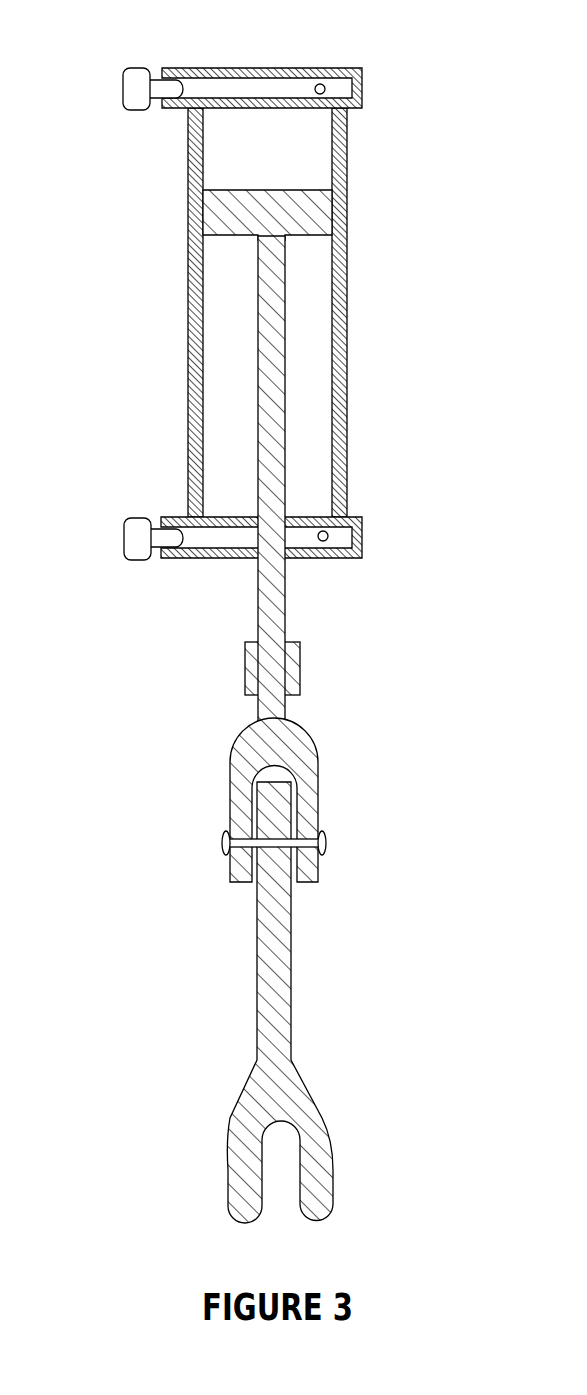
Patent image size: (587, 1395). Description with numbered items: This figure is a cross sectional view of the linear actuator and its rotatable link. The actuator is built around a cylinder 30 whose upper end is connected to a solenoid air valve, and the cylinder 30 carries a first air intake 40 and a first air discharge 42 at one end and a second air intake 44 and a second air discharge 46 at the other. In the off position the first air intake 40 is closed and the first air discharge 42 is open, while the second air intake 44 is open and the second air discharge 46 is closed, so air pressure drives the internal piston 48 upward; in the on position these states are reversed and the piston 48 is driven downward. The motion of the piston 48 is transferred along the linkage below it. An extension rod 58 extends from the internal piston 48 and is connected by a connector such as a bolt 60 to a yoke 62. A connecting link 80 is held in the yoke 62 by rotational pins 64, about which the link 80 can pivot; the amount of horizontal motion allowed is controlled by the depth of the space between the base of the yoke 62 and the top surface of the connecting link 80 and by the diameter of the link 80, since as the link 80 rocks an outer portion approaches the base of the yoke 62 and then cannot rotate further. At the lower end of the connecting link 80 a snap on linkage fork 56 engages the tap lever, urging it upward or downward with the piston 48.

The cylinder 30 is at (347, 355).
The first air intake 40 is at (130, 75).
The first air discharge 42 is at (330, 68).
The second air intake 44 is at (158, 532).
The second air discharge 46 is at (362, 525).
The internal piston 48 is at (348, 206).
The snap on linkage fork 56 is at (318, 1162).
The extension rod 58 is at (285, 609).
The bolt 60 is at (300, 670).
The yoke 62 is at (303, 787).
The rotational pins 64 is at (327, 842).
The connecting link 80 is at (278, 978).